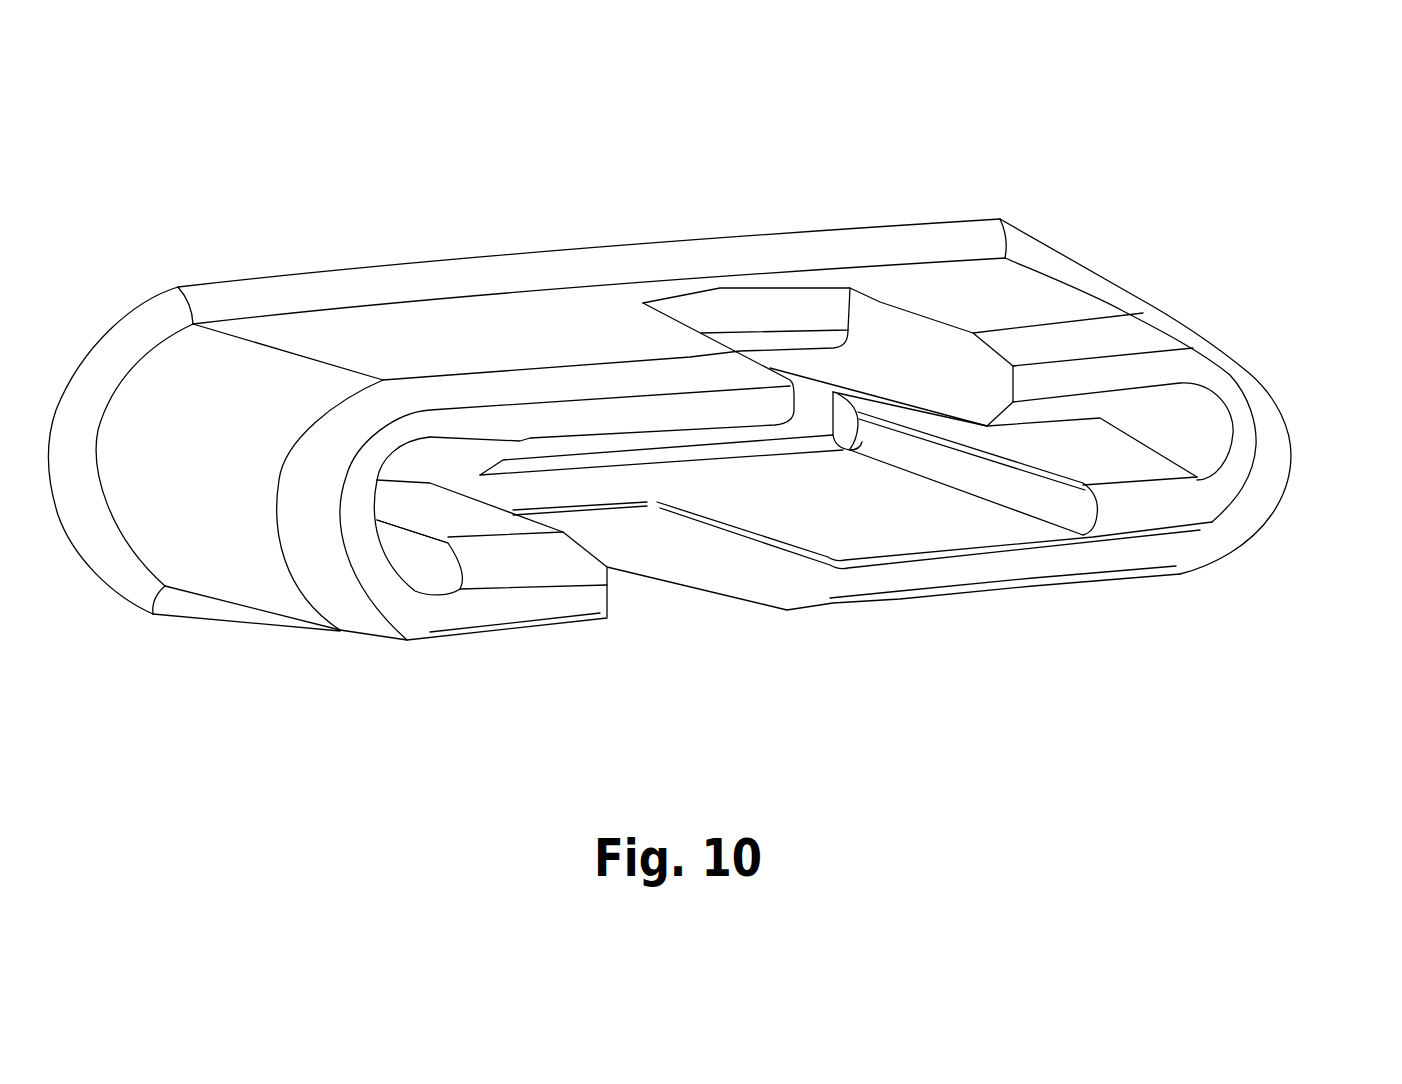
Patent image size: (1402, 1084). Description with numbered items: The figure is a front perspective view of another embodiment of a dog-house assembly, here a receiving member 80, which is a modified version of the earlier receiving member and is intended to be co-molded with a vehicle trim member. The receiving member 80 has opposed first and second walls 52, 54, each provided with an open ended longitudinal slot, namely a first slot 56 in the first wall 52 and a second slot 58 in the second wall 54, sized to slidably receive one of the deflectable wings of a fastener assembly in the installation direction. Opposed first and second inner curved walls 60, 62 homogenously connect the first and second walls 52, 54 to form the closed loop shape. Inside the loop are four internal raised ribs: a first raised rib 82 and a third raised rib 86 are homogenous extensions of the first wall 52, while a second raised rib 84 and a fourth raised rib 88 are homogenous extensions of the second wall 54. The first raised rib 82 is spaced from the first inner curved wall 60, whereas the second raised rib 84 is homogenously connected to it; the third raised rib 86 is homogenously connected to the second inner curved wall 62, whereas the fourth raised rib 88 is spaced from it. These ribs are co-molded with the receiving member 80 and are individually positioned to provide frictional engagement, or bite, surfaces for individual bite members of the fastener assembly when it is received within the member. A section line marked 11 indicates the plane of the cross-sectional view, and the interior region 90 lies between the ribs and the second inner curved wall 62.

The dog-house assembly or receiving member 80 is at (722, 192).
The first wall 52 is at (1067, 290).
The second wall 54 is at (950, 599).
The first open ended longitudinal slot 56 is at (712, 304).
The second open ended longitudinal slot 58 is at (605, 537).
The first inner curved wall 60 is at (1240, 445).
The second inner curved wall 62 is at (386, 543).
The first raised rib 82 is at (970, 408).
The second raised rib 84 is at (1057, 463).
The third raised rib 86 is at (437, 463).
The fourth raised rib 88 is at (488, 518).
The inner surface region 90 is at (1153, 513).
The section line 11- 11 is at (230, 485).